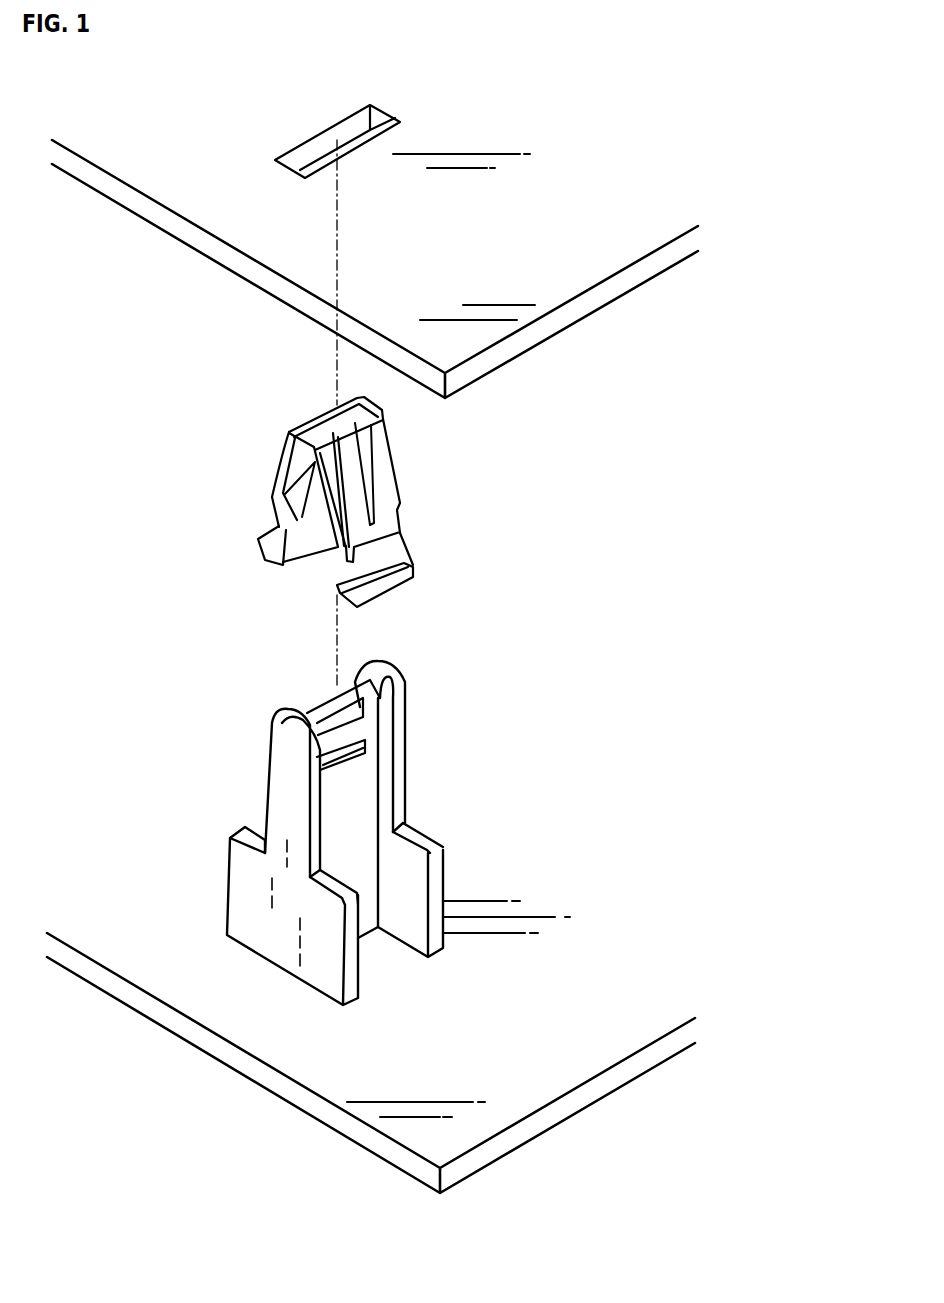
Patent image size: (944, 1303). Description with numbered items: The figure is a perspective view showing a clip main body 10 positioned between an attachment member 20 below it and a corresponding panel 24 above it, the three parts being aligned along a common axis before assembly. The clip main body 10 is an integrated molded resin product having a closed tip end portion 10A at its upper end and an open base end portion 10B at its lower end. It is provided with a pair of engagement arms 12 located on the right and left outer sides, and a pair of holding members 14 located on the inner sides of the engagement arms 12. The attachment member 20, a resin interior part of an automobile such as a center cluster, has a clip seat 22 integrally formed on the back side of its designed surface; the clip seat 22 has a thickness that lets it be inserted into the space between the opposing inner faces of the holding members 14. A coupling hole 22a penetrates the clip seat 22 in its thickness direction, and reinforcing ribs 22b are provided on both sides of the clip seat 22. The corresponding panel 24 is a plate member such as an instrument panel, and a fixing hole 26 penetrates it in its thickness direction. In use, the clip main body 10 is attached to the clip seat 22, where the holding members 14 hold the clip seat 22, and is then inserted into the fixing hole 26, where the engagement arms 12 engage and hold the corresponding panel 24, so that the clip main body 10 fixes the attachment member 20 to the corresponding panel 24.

The clip main body 10 is at (351, 482).
The closed tip end portion 10A is at (310, 410).
The open base end portion 10B is at (306, 573).
The engagement arms 12 is at (340, 492).
The holding members 14 is at (295, 488).
The attachment member 20 is at (257, 1038).
The clip seat 22 is at (372, 833).
The coupling hole 22a is at (348, 758).
The reinforcing ribs 22b is at (283, 803).
The corresponding panel 24 is at (375, 232).
The fixing hole 26 is at (355, 143).